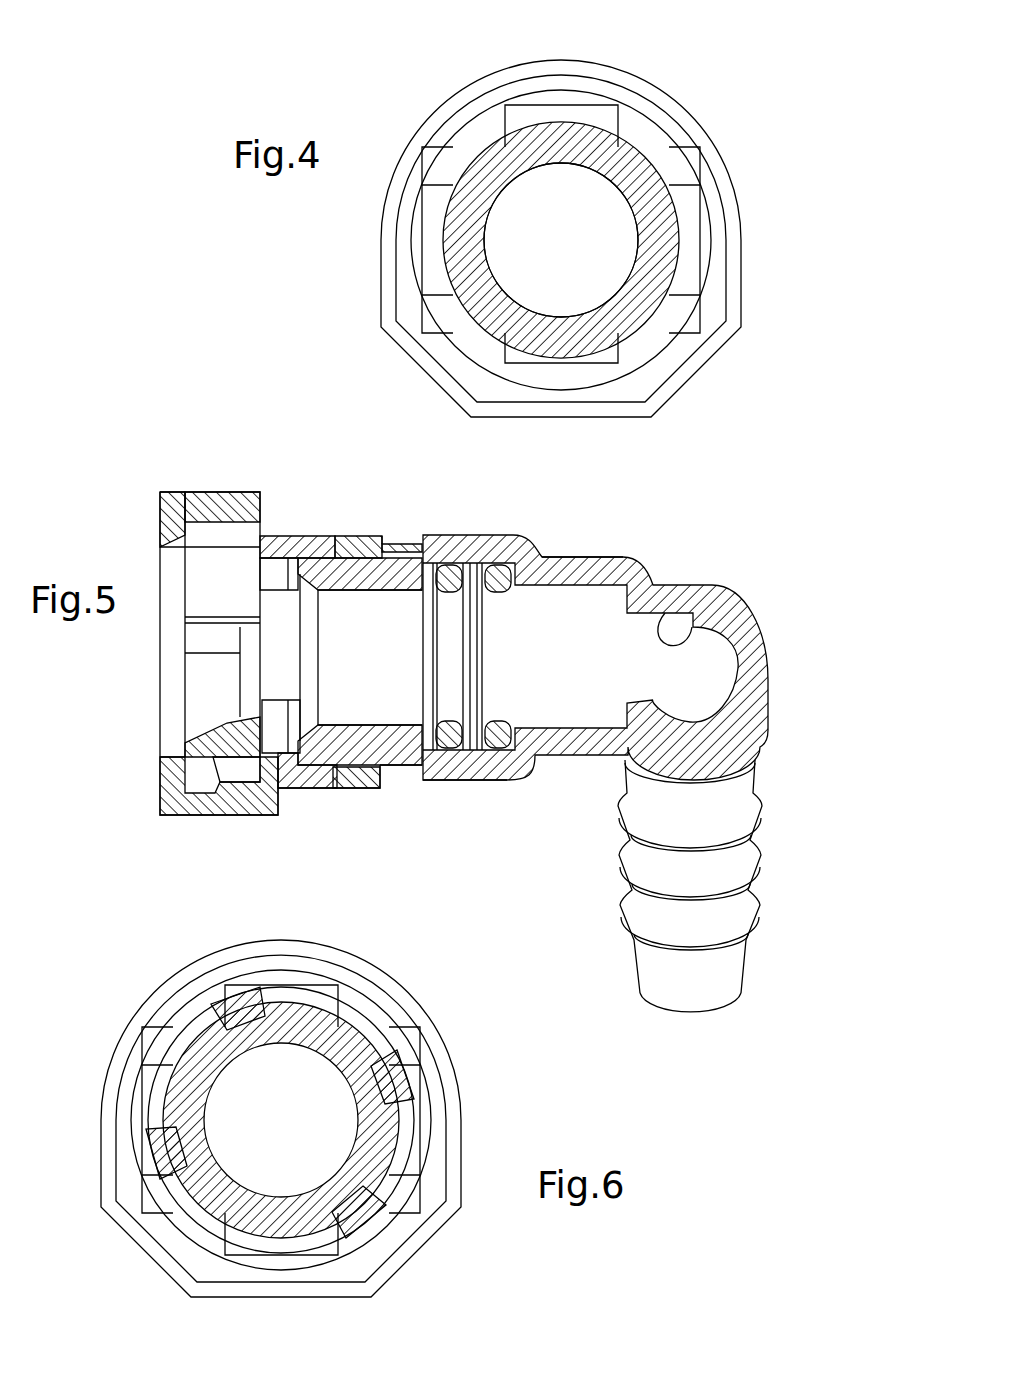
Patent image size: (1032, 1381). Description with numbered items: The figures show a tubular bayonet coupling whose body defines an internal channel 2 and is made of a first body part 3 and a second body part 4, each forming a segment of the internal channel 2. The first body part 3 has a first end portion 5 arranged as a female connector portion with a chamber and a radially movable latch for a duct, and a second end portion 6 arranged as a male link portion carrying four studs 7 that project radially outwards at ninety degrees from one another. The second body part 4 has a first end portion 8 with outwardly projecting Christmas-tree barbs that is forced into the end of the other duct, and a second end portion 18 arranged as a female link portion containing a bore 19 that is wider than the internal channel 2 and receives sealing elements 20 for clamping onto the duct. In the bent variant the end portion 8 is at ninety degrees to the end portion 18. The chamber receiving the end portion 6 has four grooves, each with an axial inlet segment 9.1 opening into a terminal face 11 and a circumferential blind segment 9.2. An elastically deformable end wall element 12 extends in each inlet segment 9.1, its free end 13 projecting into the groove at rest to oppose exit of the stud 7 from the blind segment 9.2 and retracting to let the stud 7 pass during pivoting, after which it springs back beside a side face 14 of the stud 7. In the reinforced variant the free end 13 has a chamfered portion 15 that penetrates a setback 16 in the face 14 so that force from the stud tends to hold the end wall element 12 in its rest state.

In FIG. 5, the internal channel 2 is at (332, 723).
In FIG. 5, the first body part 3 is at (142, 480).
In FIG. 5, the second body part 4 is at (677, 567).
In FIG. 5, the first end portion 5 is at (165, 772).
In FIG. 4, the second end portion 6 is at (500, 168).
In FIG. 5, the second end portion 6 is at (360, 548).
In FIG. 4, the stud 7 is at (582, 100).
In FIG. 5, the stud 7 is at (392, 577).
In FIG. 6, the stud 7 is at (305, 1000).
In FIG. 5, the first end portion 8 is at (755, 775).
In FIG. 4, the inlet segment 9.1 is at (640, 224).
In FIG. 4, the blind segment 9.2 is at (492, 132).
In FIG. 5, the blind segment 9.2 is at (408, 545).
In FIG. 5, the terminal face 11 is at (313, 537).
In FIG. 4, the end wall element 12 is at (548, 106).
In FIG. 6, the end wall element 12 is at (368, 980).
In FIG. 4, the free end 13 is at (650, 108).
In FIG. 6, the free end 13 is at (265, 1000).
In FIG. 6, the side face 14 is at (185, 1025).
In FIG. 6, the chamfered portion 15 is at (228, 985).
In FIG. 6, the setback 16 is at (263, 1043).
In FIG. 5, the second end portion 18 is at (438, 790).
In FIG. 5, the bore 19 is at (573, 600).
In FIG. 5, the sealing elements 20 is at (452, 592).